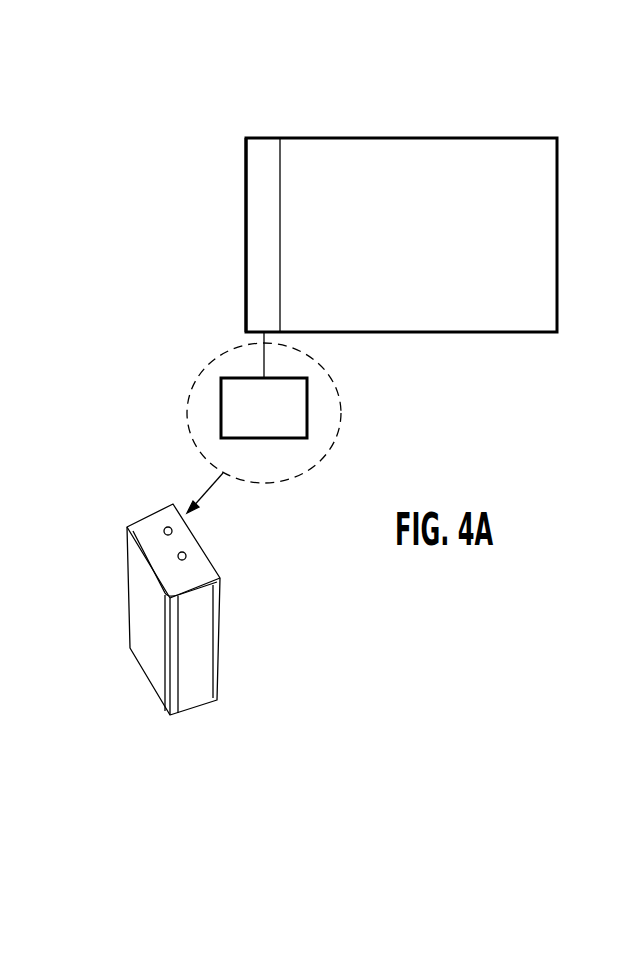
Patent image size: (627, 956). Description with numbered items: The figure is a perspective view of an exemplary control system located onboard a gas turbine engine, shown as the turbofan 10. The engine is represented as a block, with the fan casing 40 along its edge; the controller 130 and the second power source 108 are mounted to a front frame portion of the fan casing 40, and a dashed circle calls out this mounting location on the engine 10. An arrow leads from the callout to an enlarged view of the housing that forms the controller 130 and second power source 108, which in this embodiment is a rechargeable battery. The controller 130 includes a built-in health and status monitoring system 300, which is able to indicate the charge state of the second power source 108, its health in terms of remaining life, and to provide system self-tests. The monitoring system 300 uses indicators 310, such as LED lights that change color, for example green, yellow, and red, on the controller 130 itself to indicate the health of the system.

The turbofan 10 is at (442, 138).
The fan casing 40 is at (268, 138).
The second power source 108 is at (307, 410).
The controller 130 is at (150, 612).
The indicators 310 is at (179, 553).
The health and status monitoring system 300 is at (196, 637).